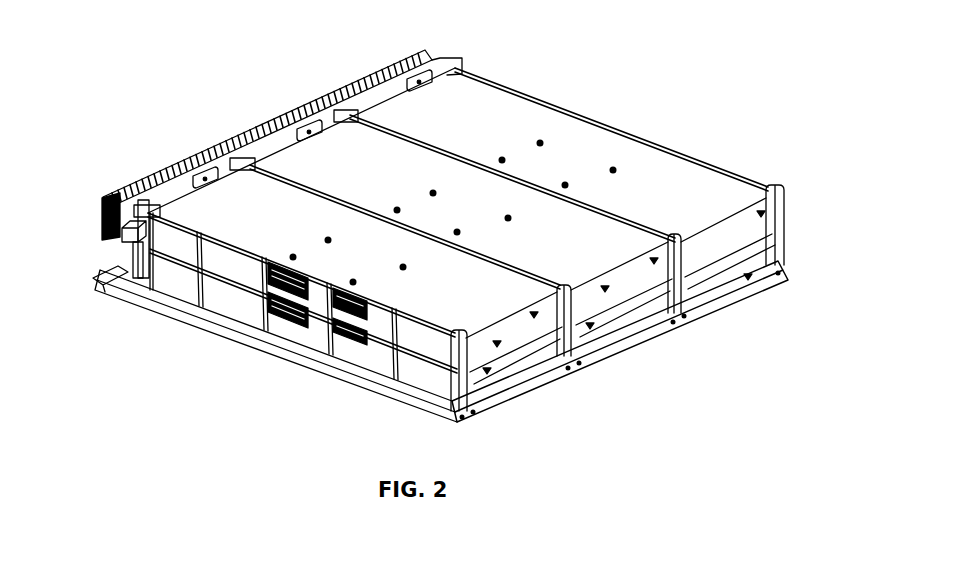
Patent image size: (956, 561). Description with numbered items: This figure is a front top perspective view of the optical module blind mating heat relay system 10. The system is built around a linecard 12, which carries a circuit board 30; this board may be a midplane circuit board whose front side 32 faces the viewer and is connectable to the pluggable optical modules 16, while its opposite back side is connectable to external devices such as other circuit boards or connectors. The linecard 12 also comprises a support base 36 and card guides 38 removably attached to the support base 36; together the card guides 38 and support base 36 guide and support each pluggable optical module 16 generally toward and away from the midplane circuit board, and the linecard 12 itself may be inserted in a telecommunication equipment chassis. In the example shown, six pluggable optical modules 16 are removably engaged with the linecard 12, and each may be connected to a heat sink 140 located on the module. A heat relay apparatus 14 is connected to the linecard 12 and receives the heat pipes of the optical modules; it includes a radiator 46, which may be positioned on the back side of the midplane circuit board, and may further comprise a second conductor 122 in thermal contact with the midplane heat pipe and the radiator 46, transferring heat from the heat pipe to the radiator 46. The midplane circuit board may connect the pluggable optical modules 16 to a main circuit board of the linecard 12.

The optical module blind mating heat relay system 10 is at (642, 66).
The linecard 12 is at (703, 310).
The heat relay apparatus 14 is at (115, 255).
The pluggable optical module 16 is at (772, 265).
The circuit board 30 is at (163, 180).
The front side 32 is at (106, 223).
The support base 36 is at (342, 378).
The card guides 38 is at (773, 185).
The radiator 46 is at (340, 93).
The second conductor 122 is at (118, 285).
The heat sink 140 is at (250, 283).